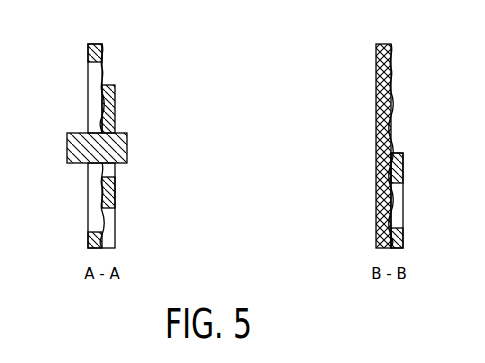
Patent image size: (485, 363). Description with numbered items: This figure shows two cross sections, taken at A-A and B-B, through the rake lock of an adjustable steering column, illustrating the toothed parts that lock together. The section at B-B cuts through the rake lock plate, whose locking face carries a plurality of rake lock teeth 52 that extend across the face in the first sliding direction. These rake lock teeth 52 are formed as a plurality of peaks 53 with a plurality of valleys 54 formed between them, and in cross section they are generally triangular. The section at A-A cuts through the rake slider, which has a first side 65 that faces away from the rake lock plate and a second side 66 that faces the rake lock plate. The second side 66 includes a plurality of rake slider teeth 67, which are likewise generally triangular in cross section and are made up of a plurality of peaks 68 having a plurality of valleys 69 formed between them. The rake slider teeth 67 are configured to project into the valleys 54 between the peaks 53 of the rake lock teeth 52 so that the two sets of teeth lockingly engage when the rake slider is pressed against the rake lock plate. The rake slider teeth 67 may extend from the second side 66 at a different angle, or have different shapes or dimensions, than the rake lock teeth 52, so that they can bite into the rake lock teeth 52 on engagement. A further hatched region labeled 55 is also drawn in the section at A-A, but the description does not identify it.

The rake lock teeth 52 is at (391, 68).
The peaks 53 is at (391, 93).
The valleys 54 is at (392, 102).
The top hatched portion 55 is at (88, 53).
The first side 65 is at (112, 103).
The second side 66 is at (103, 98).
The rake slider teeth 67 is at (102, 202).
The peaks 68 is at (102, 190).
The valleys 69 is at (102, 198).